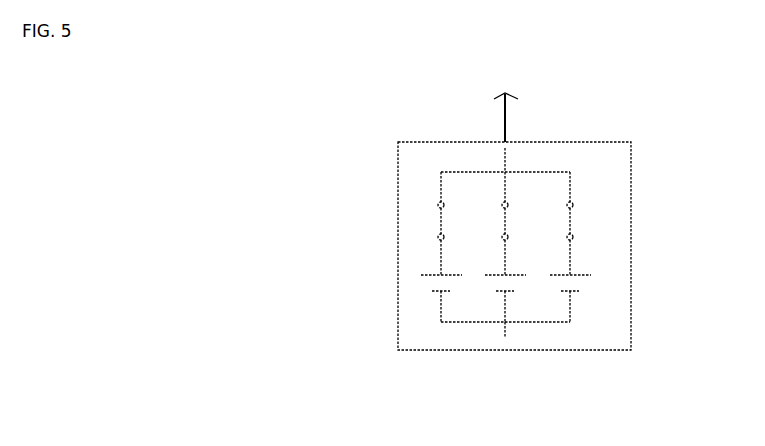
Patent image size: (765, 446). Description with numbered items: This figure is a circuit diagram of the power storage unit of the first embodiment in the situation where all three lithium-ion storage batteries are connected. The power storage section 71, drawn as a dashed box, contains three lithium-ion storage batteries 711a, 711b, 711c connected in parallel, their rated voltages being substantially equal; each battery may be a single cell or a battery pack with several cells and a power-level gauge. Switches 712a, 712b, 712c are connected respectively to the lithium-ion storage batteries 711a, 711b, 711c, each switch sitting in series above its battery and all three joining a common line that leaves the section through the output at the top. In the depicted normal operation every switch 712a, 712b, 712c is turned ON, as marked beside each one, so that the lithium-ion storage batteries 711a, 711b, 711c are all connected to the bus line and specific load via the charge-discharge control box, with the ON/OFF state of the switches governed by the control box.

The power storage section 71 is at (614, 351).
The lithium-ion storage battery 711a is at (433, 291).
The lithium-ion storage battery 711b is at (498, 291).
The lithium-ion storage battery 711c is at (564, 291).
The switch 712a is at (437, 228).
The switch 712b is at (502, 227).
The switch 712c is at (566, 227).